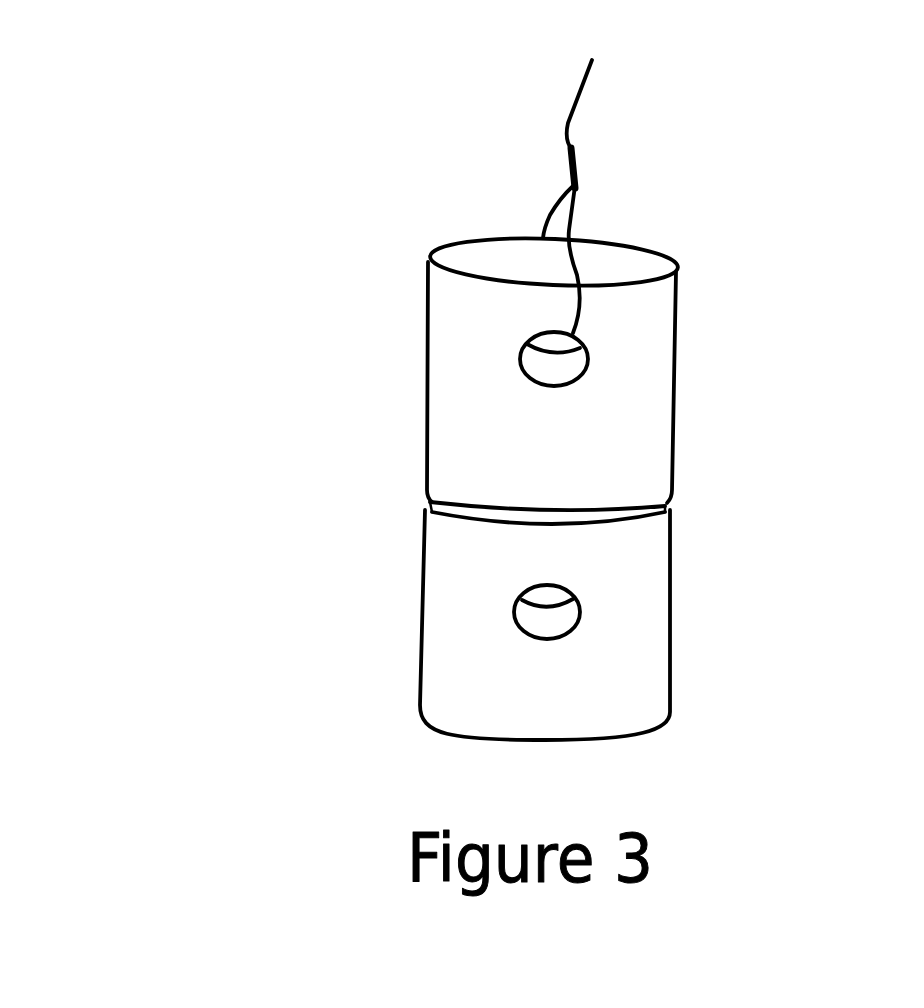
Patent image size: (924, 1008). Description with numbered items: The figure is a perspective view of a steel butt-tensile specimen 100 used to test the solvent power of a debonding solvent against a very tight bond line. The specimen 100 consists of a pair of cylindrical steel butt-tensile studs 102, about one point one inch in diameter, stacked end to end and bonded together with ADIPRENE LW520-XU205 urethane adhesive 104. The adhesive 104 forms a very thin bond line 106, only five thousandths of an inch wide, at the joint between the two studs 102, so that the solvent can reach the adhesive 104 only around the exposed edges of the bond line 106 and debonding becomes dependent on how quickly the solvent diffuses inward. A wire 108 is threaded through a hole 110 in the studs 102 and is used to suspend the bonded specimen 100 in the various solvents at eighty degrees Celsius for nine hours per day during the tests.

The butt-tensile specimen 100 is at (513, 454).
The steel butt-tensile stud 102 is at (672, 445).
The urethane adhesive 104 is at (490, 525).
The bond line 106 is at (680, 502).
The wire 108 is at (555, 197).
The hole 110 is at (527, 378).